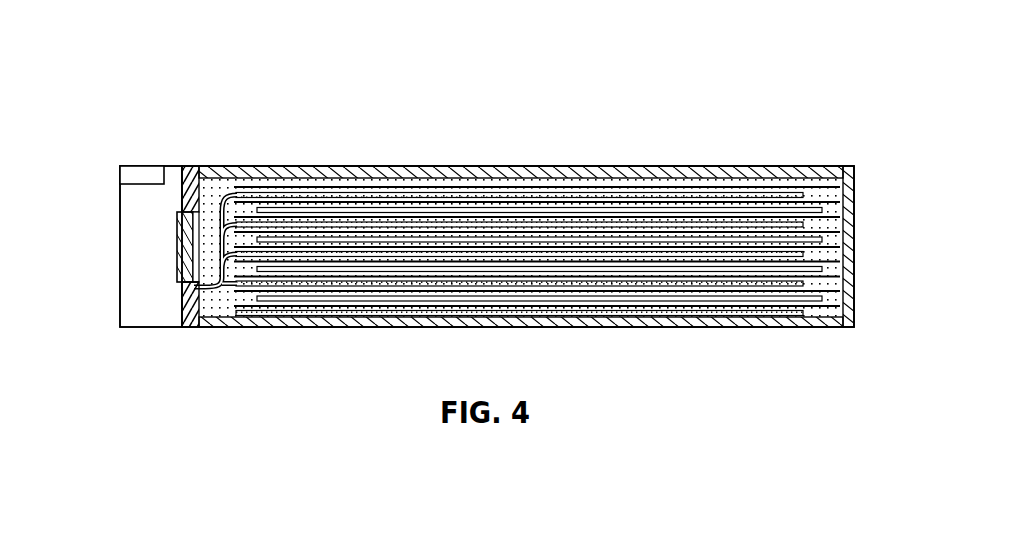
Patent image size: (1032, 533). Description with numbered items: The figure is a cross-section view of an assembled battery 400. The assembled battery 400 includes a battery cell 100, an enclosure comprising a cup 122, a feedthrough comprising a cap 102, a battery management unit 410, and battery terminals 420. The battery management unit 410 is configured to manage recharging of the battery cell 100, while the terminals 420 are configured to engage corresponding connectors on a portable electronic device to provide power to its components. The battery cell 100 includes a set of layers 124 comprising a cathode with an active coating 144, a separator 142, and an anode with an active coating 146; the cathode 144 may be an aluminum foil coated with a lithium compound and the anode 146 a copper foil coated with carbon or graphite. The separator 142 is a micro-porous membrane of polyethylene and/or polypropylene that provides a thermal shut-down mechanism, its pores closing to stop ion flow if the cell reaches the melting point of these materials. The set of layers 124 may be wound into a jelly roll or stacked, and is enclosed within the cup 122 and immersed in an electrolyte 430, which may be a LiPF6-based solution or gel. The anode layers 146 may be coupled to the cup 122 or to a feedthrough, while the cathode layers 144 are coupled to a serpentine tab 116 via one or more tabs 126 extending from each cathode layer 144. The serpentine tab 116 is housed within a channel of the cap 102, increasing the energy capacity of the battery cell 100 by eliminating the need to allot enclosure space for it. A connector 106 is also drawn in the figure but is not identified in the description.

The assembled battery 400 is at (77, 56).
The battery cell 100 is at (484, 218).
The cap 102 is at (182, 310).
The connector 106 is at (177, 238).
The serpentine tab 116 is at (118, 321).
The cup 122 is at (556, 167).
The set of layers 124 is at (584, 239).
The tabs 126 is at (221, 190).
The separator 142 is at (356, 187).
The cathode with active coating 144 is at (588, 288).
The anode with active coating 146 is at (836, 193).
The battery management unit 410 is at (120, 257).
The battery terminals 420 is at (135, 175).
The electrolyte 430 is at (470, 179).